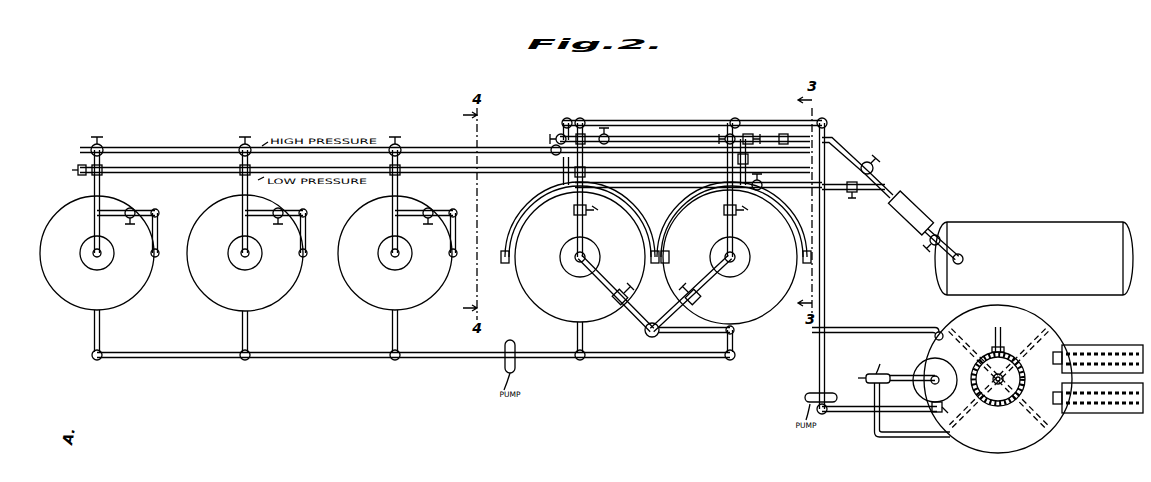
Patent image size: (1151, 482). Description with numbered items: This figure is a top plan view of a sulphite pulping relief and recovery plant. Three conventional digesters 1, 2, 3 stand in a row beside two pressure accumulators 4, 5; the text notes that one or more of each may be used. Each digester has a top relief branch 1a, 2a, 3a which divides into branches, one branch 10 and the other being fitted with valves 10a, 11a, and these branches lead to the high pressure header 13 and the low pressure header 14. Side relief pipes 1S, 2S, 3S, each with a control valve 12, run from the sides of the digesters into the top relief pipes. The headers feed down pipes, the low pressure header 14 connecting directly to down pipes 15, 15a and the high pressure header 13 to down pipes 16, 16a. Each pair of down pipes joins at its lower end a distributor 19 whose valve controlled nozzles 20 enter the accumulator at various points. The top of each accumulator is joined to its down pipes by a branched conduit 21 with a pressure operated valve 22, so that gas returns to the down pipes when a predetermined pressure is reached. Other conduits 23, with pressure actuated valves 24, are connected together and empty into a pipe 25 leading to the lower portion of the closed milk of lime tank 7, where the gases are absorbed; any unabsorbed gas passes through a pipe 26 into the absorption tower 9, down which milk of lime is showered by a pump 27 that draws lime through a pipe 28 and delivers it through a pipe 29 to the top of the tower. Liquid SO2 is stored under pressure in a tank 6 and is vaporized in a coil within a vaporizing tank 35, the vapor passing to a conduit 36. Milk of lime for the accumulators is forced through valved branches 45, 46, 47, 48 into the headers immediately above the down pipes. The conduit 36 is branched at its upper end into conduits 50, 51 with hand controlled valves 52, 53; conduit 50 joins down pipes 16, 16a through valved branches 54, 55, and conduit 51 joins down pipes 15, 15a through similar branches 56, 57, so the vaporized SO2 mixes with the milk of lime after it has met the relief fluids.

The digester 1 is at (128, 298).
The digester 2 is at (272, 300).
The digester 3 is at (418, 302).
The top relief branch 1a is at (93, 193).
The top relief branch 2a is at (241, 190).
The top relief branch 3a is at (391, 193).
The side relief pipe 1S is at (160, 232).
The side relief pipe 2S is at (308, 232).
The side relief pipe 3S is at (458, 214).
The pressure accumulator 4 is at (594, 315).
The pressure accumulator 5 is at (770, 304).
The storage tank for liquid SO2 6 is at (1072, 223).
The milk of lime tank 7 is at (1042, 327).
The absorption tower 9 is at (927, 364).
The branch 10 is at (80, 164).
The valve 10a is at (400, 163).
The valve 11a is at (103, 143).
The control valve 12 is at (134, 207).
The high pressure header 13 is at (205, 147).
The low pressure header 14 is at (142, 167).
The down pipe 15 is at (572, 186).
The down pipe 15a is at (712, 186).
The down pipe 16 is at (552, 147).
The down pipe 16a is at (748, 160).
The distributor 19 is at (509, 243).
The valve controlled nozzle 20 is at (505, 264).
The branched conduit 21 is at (584, 232).
The pressure operated valve 22 is at (574, 214).
The conduit 23 is at (604, 283).
The pressure actuated valve 24 is at (630, 302).
The pipe 25 is at (693, 335).
The pipe 26 is at (932, 412).
The pump 27 is at (864, 377).
The pipe 28 is at (929, 441).
The pipe 29 is at (906, 383).
The vaporizing tank 35 is at (935, 234).
The conduit 36 is at (903, 200).
The valved branch 45 is at (560, 133).
The valved branch 46 is at (606, 132).
The valved branch 47 is at (728, 133).
The valved branch 48 is at (750, 133).
The conduit 50 is at (848, 151).
The conduit 51 is at (836, 192).
The hand controlled valve 52 is at (875, 166).
The hand controlled valve 53 is at (858, 193).
The valved branch 54 is at (582, 133).
The valved branch 55 is at (784, 133).
The valved branch 56 is at (590, 170).
The valved branch 57 is at (765, 184).